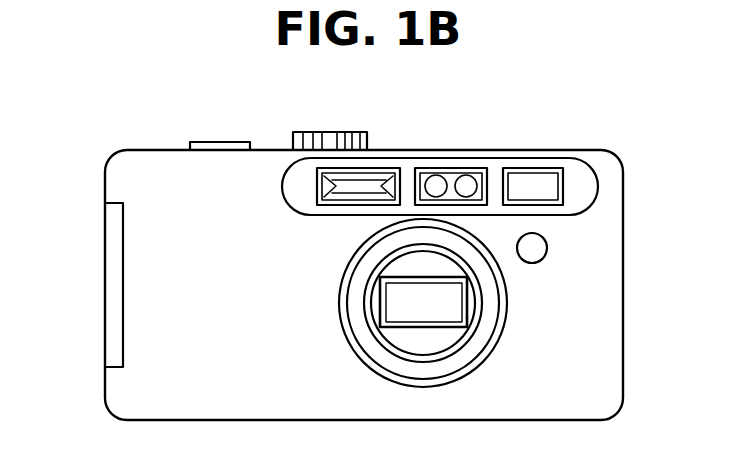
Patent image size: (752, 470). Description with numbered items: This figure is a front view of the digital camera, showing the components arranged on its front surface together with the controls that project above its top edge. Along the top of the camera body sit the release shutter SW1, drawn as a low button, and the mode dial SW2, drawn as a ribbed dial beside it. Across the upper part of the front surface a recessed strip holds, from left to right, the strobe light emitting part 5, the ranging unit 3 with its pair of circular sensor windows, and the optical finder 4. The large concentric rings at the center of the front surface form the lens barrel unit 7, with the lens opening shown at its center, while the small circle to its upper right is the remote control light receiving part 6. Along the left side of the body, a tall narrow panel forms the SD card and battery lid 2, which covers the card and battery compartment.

The SD card and battery lid 2 is at (105, 255).
The release shutter SW1 is at (226, 142).
The mode dial SW2 is at (334, 132).
The strobe light emitting part 5 is at (392, 168).
The ranging unit 3 is at (467, 175).
The optical finder 4 is at (549, 185).
The remote control light receiving part 6 is at (538, 252).
The lens barrel unit 7 is at (443, 340).